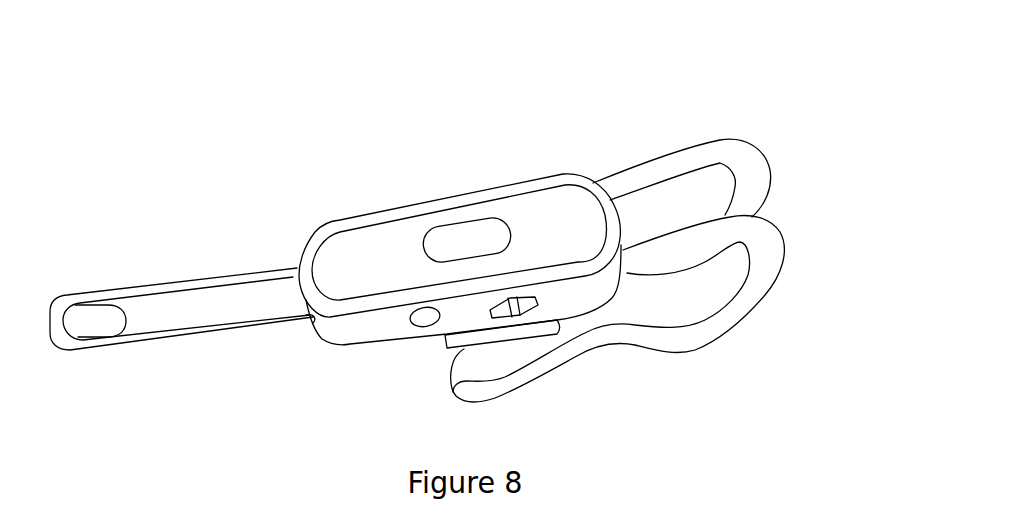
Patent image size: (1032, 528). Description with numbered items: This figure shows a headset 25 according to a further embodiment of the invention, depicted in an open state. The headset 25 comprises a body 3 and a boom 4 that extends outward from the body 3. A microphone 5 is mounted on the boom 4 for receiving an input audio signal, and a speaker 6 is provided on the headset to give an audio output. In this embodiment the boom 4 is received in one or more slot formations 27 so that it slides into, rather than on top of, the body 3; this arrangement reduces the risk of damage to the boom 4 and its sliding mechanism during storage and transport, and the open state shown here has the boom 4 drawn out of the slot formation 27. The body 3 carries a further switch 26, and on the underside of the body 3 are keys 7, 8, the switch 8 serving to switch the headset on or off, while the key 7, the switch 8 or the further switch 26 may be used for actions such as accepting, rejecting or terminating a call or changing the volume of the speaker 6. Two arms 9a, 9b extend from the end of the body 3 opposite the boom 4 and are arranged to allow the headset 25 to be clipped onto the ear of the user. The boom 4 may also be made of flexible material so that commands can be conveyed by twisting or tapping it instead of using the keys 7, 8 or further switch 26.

The body 3 is at (517, 183).
The boom 4 is at (212, 272).
The microphone 5 is at (90, 338).
The speaker 6 is at (451, 351).
The key 7 is at (405, 328).
The switch 8 is at (487, 315).
The arm 9a is at (677, 140).
The arm 9b is at (767, 318).
The headset 25 is at (774, 48).
The further switch 26 is at (450, 222).
The slot formation 27 is at (313, 330).